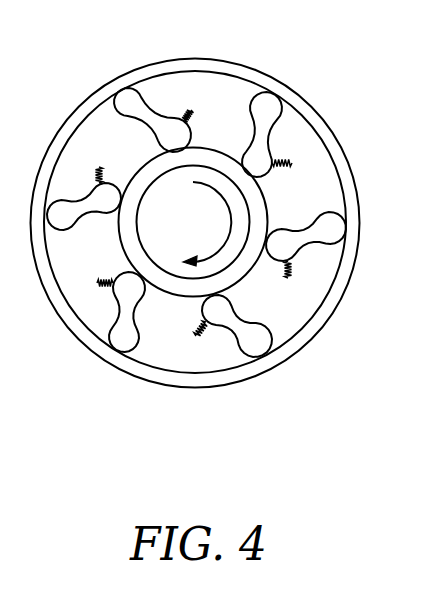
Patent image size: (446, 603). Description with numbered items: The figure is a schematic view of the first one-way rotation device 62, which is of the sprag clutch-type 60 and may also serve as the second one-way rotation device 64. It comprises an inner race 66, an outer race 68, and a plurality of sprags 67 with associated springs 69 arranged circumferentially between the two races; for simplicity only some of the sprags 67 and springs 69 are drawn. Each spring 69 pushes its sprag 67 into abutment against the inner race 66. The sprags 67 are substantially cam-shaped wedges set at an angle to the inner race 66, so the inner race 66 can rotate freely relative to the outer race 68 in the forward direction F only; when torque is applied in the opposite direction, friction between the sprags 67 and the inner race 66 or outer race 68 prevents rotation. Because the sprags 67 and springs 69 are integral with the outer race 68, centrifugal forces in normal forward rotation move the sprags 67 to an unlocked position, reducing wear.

The sprag clutch-type 60 is at (216, 219).
The first one-way rotation device 62 is at (216, 219).
The second one-way rotation device 64 is at (216, 219).
The inner race 66 is at (243, 265).
The sprags 67 is at (127, 102).
The outer race 68 is at (305, 112).
The springs 69 is at (190, 112).
The forward direction F is at (233, 218).